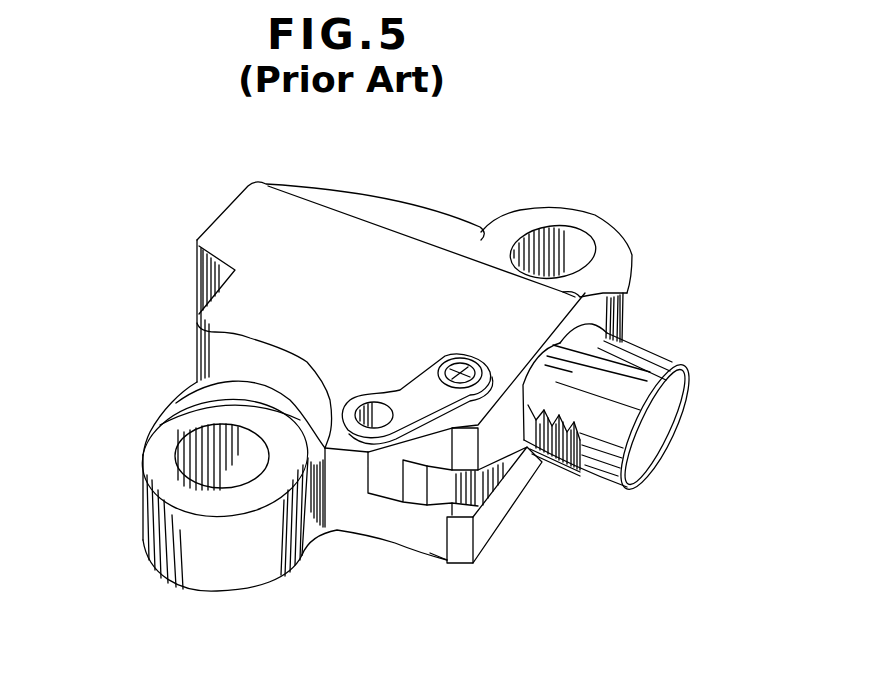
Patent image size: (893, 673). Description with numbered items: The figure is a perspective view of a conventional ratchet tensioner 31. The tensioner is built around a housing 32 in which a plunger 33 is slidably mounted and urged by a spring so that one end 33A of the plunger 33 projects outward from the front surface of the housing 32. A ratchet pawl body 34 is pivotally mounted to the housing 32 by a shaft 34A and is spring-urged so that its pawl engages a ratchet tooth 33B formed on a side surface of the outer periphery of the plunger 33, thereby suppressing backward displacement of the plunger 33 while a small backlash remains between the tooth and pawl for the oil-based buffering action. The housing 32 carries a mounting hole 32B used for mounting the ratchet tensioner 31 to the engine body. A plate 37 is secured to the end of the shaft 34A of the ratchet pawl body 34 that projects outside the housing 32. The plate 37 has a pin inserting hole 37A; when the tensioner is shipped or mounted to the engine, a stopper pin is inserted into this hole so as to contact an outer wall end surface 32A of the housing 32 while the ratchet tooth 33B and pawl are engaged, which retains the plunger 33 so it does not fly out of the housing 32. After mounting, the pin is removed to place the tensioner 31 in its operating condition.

The ratchet tensioner 31 is at (465, 203).
The housing 32 is at (277, 222).
The outer wall end surface 32A is at (417, 442).
The mounting hole 32B is at (570, 262).
The plunger 33 is at (617, 377).
The end of the plunger 33A is at (637, 398).
The ratchet tooth 33B is at (567, 458).
The ratchet pawl body 34 is at (503, 462).
The shaft 34A is at (462, 360).
The plate 37 is at (415, 393).
The pin inserting hole 37A is at (373, 398).